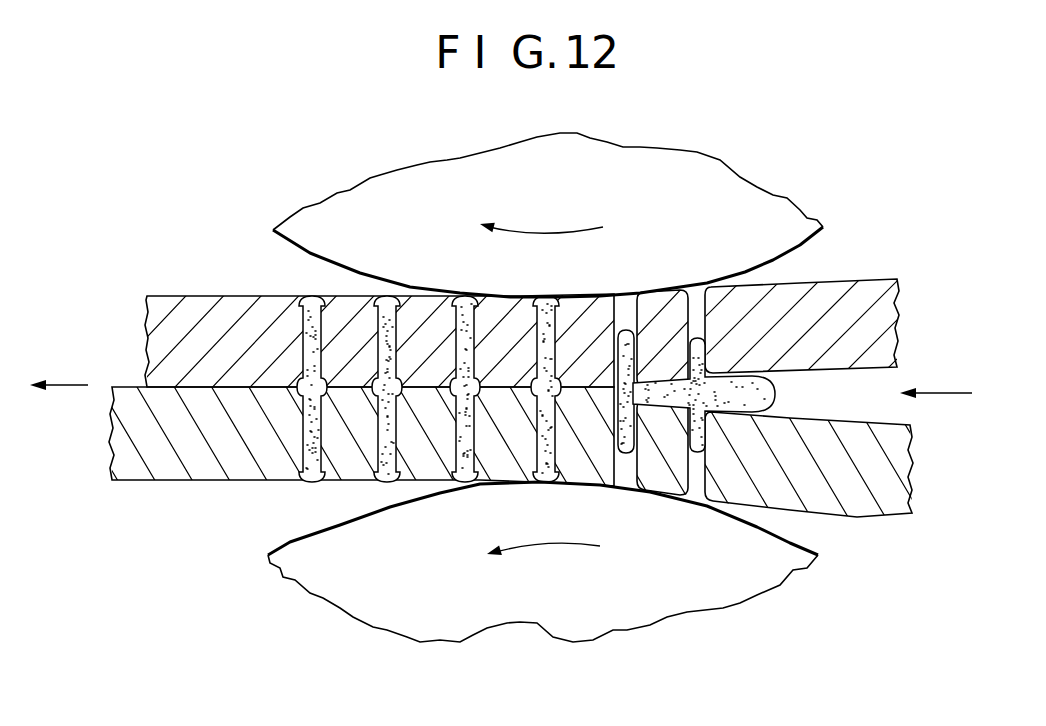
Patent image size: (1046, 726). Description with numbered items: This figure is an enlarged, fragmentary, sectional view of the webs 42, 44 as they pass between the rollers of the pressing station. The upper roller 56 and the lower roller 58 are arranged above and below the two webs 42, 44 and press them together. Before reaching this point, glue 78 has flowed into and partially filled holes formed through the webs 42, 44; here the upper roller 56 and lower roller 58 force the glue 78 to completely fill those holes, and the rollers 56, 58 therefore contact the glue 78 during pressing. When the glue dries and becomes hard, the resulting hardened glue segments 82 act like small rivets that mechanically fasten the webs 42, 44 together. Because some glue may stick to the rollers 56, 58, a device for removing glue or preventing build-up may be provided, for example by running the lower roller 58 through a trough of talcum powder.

The web 42 is at (870, 287).
The web 44 is at (878, 497).
The upper roller 56 is at (788, 218).
The lower roller 58 is at (745, 578).
The glue 78 is at (776, 393).
The hardened glue segments 82 is at (380, 483).